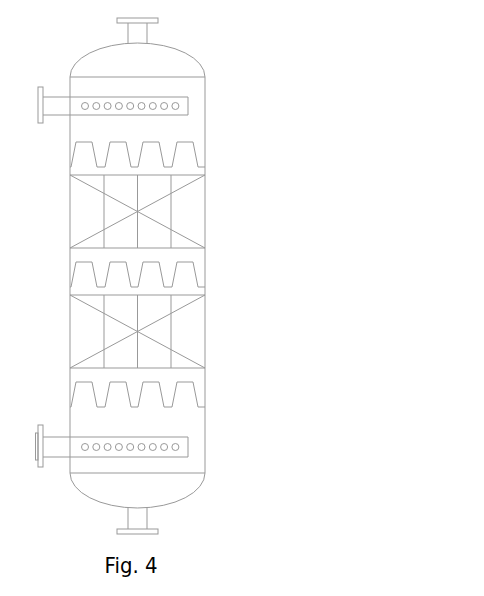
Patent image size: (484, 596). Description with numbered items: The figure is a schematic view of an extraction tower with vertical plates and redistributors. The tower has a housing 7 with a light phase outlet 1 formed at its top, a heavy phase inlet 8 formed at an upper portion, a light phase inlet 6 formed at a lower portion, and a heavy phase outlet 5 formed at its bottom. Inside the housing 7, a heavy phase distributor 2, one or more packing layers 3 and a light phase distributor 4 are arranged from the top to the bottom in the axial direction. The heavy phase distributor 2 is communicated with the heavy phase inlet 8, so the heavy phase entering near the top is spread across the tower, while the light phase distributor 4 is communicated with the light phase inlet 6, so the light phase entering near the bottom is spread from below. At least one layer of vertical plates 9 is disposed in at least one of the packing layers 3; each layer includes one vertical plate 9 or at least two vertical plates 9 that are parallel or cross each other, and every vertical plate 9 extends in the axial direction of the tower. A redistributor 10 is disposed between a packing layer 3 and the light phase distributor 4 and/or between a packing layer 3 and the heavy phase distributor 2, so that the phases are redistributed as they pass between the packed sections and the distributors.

The light phase outlet 1 is at (140, 33).
The heavy phase distributor 2 is at (180, 108).
The packing layer 3 is at (182, 217).
The light phase distributor 4 is at (183, 448).
The heavy phase outlet 5 is at (140, 519).
The light phase inlet 6 is at (67, 442).
The housing 7 is at (70, 259).
The heavy phase inlet 8 is at (63, 112).
The vertical plates 9 is at (102, 197).
The redistributor 10 is at (197, 153).